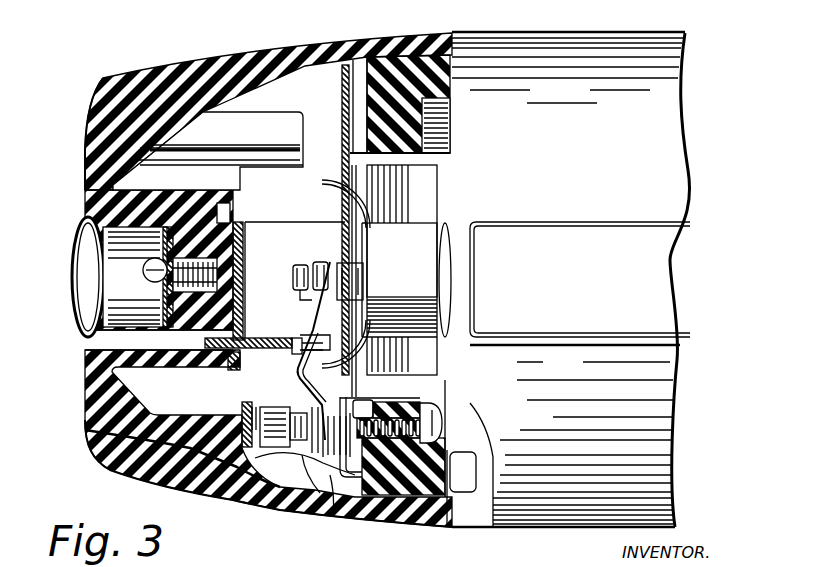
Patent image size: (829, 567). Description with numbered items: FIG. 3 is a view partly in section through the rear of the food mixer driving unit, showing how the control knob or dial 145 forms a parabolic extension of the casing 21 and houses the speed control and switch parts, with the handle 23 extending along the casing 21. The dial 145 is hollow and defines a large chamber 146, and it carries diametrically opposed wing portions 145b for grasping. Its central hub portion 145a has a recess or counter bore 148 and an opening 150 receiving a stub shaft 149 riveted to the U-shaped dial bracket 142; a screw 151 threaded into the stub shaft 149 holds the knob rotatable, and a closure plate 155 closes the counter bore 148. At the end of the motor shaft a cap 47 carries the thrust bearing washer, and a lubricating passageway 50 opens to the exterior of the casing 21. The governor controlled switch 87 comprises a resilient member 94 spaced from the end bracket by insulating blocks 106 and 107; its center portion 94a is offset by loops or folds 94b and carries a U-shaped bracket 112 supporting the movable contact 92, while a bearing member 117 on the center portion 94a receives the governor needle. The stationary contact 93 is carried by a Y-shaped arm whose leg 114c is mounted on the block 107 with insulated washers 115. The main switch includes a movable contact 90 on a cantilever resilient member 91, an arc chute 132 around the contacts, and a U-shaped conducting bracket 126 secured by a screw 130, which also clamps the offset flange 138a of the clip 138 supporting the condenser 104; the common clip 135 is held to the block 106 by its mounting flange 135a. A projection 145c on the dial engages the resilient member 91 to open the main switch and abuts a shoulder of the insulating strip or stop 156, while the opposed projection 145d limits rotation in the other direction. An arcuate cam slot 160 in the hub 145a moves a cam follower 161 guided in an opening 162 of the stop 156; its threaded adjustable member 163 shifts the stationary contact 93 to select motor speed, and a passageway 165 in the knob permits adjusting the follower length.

The casing 21 is at (663, 100).
The handle 23 is at (640, 200).
The cap 47 is at (402, 260).
The lubricating passageway 50 is at (453, 282).
The governor controlled switch 87 is at (313, 238).
The movable contact 90 is at (253, 506).
The resilient member 91 is at (310, 455).
The movable contact 92 is at (300, 307).
The stationary contact 93 is at (323, 264).
The resilient member 94 is at (338, 153).
The center portion 94a is at (368, 248).
The loops or folds 94b is at (347, 173).
The condenser 104 is at (413, 196).
The insulating block 106 is at (438, 20).
The insulating block 107 is at (408, 520).
The U-shaped bracket 112 is at (300, 262).
The leg 114c is at (311, 405).
The insulated washers 115 is at (320, 493).
The bearing member 117 is at (360, 282).
The conducting bracket 126 is at (333, 517).
The screw 130 is at (438, 418).
The arc chute 132 is at (270, 400).
The supporting clip 135 is at (388, 158).
The mounting flange 135a is at (377, 34).
The clip 138 is at (430, 392).
The offset flange 138a is at (442, 440).
The bracket member 142 is at (279, 222).
The control knob 145 is at (263, 46).
The central hub portion 145a is at (158, 175).
The wing portions 145b is at (118, 78).
The projection 145c is at (220, 418).
The projection 145d is at (262, 112).
The chamber 146 is at (266, 163).
The recess 148 is at (120, 320).
The stub shaft 149 is at (167, 307).
The opening 150 is at (160, 257).
The screw 151 is at (153, 273).
The closure plate 155 is at (80, 227).
The insulating strip 156 is at (234, 372).
The arcuate cam slot 160 is at (221, 213).
The cam follower 161 is at (298, 340).
The opening 162 is at (258, 348).
The adjustable member 163 is at (308, 366).
The passageway 165 is at (93, 340).